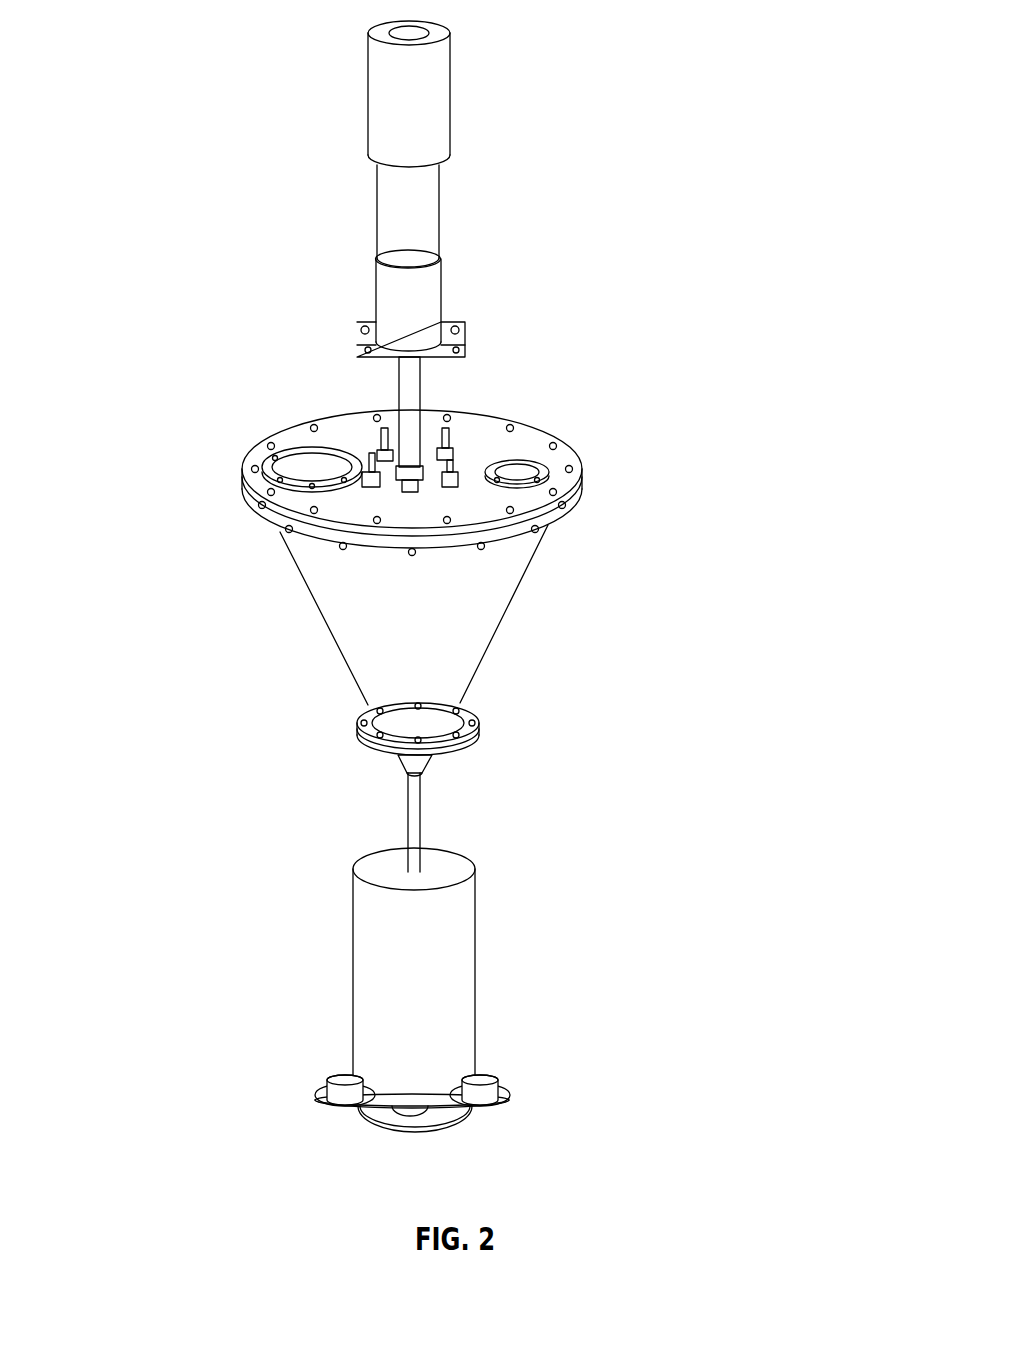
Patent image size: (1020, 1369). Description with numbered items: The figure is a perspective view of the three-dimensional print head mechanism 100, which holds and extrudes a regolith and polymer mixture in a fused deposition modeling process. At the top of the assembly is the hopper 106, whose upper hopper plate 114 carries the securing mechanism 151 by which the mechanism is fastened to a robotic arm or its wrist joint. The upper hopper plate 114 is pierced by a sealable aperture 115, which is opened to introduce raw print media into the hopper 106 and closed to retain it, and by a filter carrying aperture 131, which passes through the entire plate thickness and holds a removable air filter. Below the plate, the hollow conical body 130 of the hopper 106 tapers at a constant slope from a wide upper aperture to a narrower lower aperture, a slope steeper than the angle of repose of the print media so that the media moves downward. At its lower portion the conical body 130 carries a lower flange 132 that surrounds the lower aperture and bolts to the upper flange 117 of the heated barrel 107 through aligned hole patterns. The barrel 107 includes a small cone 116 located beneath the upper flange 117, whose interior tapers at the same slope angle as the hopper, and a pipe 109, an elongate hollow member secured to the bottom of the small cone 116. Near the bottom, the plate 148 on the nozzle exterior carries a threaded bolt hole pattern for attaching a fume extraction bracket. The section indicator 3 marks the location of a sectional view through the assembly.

The 3D print head mechanism 100 is at (474, 599).
The securing mechanism 151 is at (348, 325).
The sealable aperture 115 is at (430, 459).
The section line for FIG. 3 is at (408, 448).
The upper hopper plate 114 is at (430, 460).
The filter carrying aperture 131 is at (537, 441).
The hopper 106 is at (442, 569).
The hollow conical body 130 is at (325, 620).
The lower flange 132 is at (485, 703).
The upper flange 117 is at (410, 724).
The small cone 116 is at (436, 776).
The heated barrel 107 is at (370, 792).
The pipe 109 is at (422, 812).
The plate 148 is at (351, 1139).